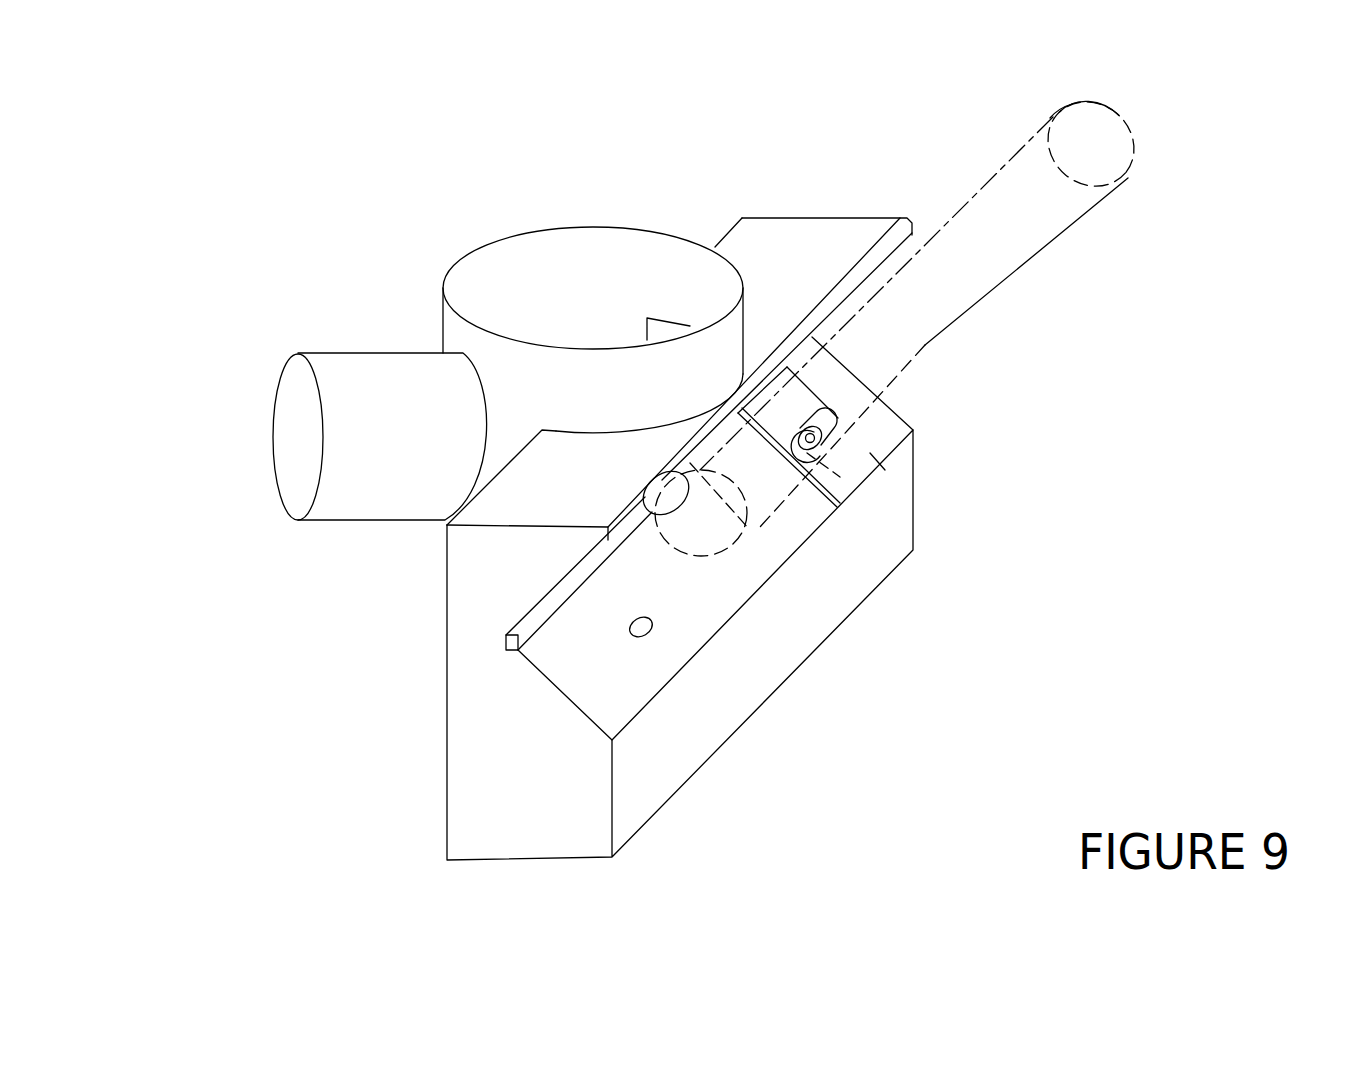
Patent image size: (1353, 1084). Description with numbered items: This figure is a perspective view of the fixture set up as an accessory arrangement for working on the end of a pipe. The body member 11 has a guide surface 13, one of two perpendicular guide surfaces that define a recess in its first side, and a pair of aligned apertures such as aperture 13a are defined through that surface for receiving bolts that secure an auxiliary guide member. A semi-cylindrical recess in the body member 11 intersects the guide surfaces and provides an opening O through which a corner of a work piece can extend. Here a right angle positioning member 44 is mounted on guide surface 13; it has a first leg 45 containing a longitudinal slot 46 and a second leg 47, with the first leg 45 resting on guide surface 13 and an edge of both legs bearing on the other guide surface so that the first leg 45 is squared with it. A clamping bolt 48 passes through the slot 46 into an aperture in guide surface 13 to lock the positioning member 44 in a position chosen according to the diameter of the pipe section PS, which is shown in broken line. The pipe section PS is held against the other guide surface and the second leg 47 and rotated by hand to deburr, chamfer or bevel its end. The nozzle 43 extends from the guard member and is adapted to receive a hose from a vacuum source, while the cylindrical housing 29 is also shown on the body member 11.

The body member 11 is at (680, 610).
The guide surface 13 is at (862, 426).
The aperture 13a is at (799, 688).
The cylindrical housing 29 is at (593, 278).
The nozzle 43 is at (401, 511).
The right angle positioning member 44 is at (1034, 555).
The first leg 45 is at (974, 498).
The longitudinal slot 46 is at (951, 403).
The second leg 47 is at (922, 540).
The clamping bolt 48 is at (941, 466).
The opening O is at (565, 717).
The pipe section PS is at (992, 320).